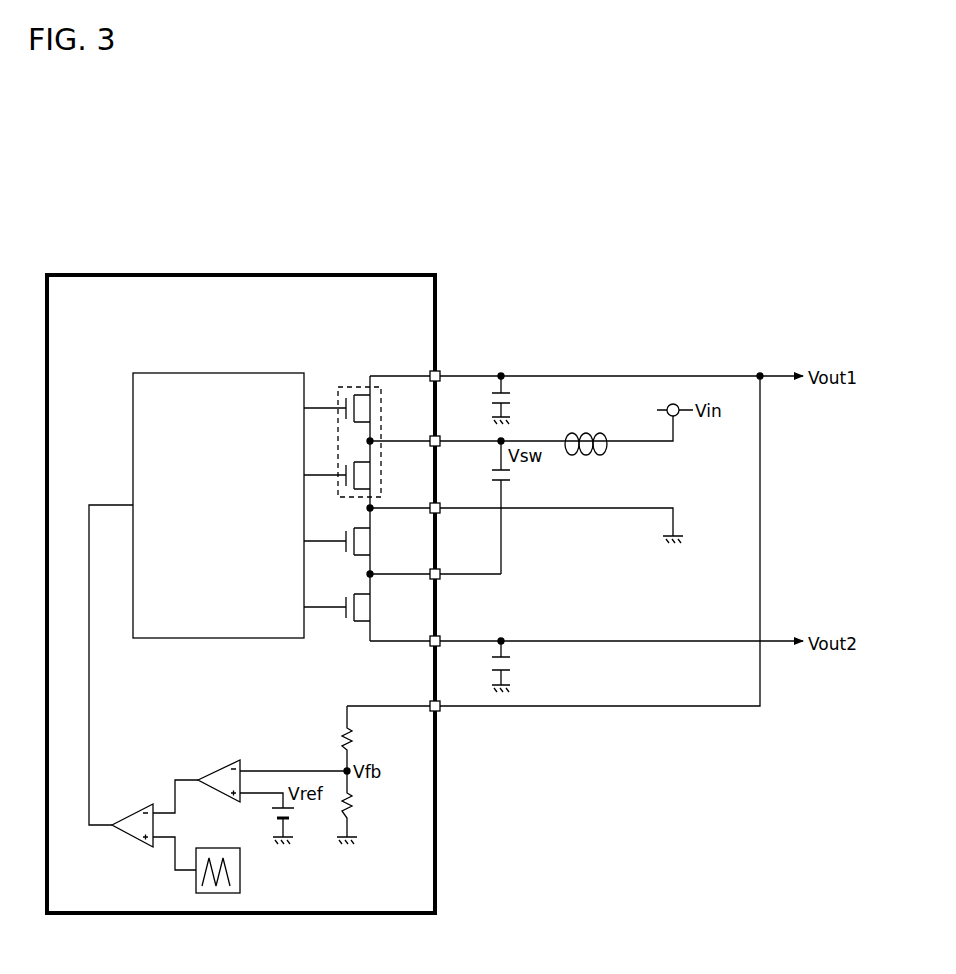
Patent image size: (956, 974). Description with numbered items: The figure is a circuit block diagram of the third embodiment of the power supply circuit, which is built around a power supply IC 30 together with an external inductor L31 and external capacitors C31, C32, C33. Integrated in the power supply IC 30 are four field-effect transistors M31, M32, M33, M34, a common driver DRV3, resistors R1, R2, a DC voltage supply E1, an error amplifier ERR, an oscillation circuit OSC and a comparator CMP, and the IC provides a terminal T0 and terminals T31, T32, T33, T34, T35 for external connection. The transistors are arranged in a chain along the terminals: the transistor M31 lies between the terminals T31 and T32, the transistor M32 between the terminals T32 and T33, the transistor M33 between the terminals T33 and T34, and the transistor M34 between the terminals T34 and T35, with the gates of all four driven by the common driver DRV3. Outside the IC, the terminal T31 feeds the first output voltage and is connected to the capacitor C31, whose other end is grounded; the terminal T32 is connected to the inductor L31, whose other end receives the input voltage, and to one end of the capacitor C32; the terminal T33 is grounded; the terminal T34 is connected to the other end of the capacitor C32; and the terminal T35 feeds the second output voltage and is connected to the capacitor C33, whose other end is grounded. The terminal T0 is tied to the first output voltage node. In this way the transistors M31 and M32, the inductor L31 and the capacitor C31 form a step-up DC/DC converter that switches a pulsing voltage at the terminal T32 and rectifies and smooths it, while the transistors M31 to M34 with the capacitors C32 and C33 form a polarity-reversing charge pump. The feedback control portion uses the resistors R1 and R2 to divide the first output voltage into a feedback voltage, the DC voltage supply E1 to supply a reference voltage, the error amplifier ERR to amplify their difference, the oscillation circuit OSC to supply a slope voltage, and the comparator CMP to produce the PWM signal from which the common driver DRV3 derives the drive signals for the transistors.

The power supply IC 30 is at (242, 276).
The common driver DRV3 is at (221, 374).
The field-effect transistor M31 is at (362, 409).
The field-effect transistor M32 is at (362, 476).
The field-effect transistor M33 is at (362, 542).
The field-effect transistor M34 is at (362, 608).
The terminal T31 is at (440, 382).
The terminal T32 is at (440, 447).
The terminal T33 is at (440, 514).
The terminal T34 is at (440, 580).
The terminal T35 is at (440, 647).
The terminal T0 is at (440, 712).
The capacitor C31 is at (511, 400).
The capacitor C32 is at (511, 476).
The capacitor C33 is at (511, 664).
The inductor L31 is at (586, 435).
The resistor R1 is at (354, 740).
The resistor R2 is at (354, 805).
The DC voltage supply E1 is at (296, 812).
The comparator CMP is at (130, 815).
The error amplifier ERR is at (215, 771).
The oscillation circuit OSC is at (218, 848).